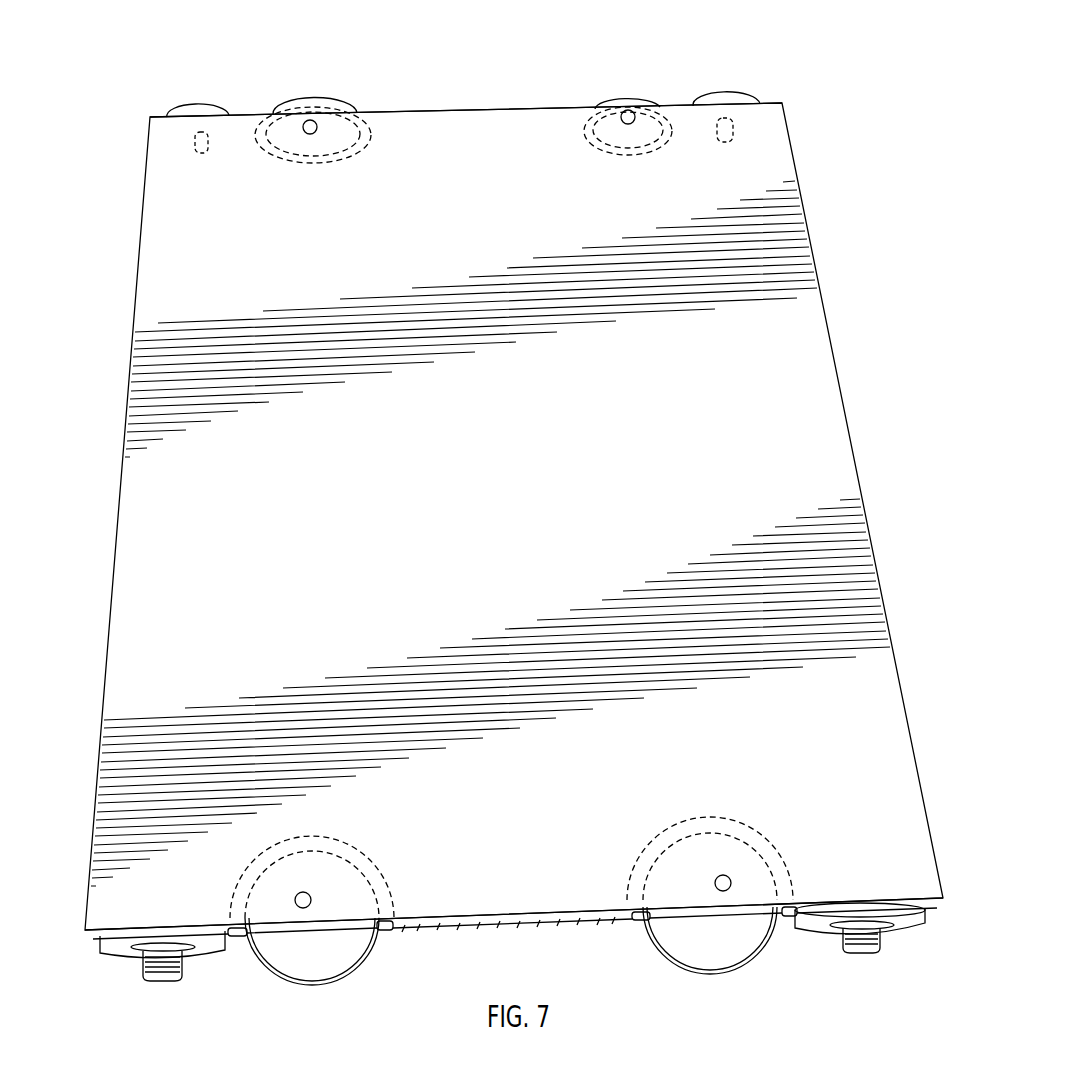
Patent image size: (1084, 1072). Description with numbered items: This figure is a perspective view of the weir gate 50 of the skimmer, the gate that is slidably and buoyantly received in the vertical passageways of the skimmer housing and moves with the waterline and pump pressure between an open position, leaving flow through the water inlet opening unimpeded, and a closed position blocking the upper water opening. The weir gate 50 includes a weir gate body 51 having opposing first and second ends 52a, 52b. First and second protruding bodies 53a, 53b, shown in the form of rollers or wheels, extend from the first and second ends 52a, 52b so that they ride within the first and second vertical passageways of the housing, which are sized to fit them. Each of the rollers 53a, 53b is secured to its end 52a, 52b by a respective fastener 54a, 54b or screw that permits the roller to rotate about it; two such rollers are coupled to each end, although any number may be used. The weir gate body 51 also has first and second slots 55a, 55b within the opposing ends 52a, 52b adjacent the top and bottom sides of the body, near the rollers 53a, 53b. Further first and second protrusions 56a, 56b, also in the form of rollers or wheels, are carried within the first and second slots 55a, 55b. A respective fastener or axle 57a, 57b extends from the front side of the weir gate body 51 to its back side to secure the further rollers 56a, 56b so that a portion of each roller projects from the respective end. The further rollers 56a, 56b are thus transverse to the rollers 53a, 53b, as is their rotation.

The weir gate 50 is at (140, 226).
The weir gate body 51 is at (310, 517).
The first end 52a is at (437, 110).
The second end 52b is at (457, 927).
The first protruding body 53a is at (188, 106).
The second protruding body 53b is at (103, 957).
The fastener 54a is at (193, 142).
The fastener 54b is at (160, 980).
The first slot 55a is at (293, 163).
The second slot 55b is at (267, 843).
The first further protrusion 56a is at (300, 103).
The second further protrusion 56b is at (295, 985).
The fastener or axle 57a is at (317, 125).
The fastener or axle 57b is at (311, 898).